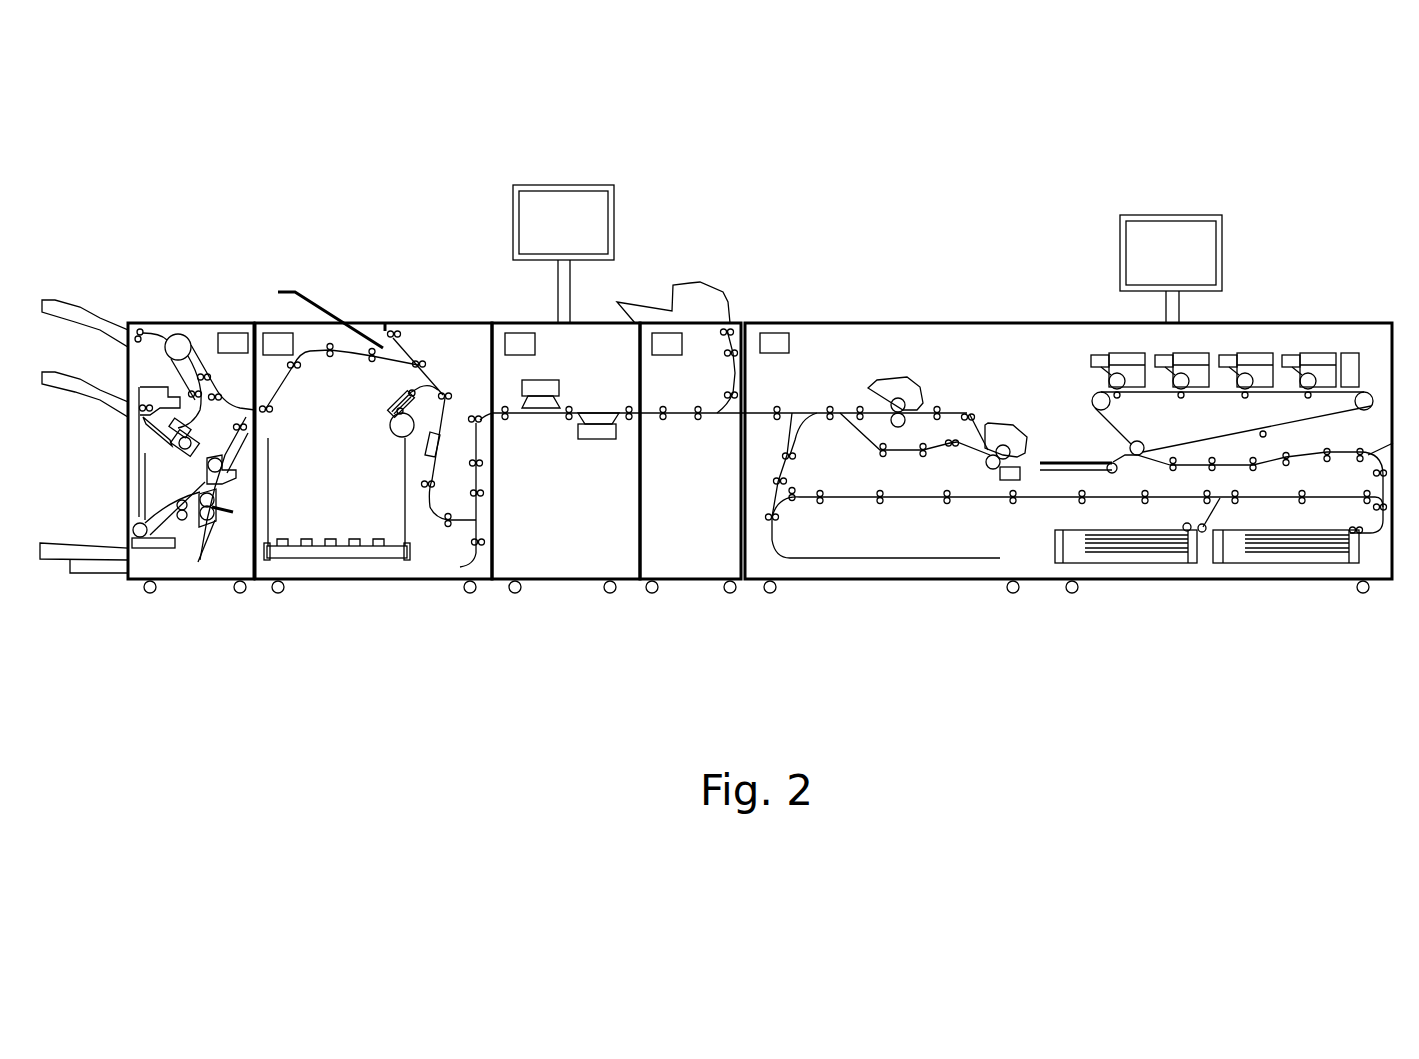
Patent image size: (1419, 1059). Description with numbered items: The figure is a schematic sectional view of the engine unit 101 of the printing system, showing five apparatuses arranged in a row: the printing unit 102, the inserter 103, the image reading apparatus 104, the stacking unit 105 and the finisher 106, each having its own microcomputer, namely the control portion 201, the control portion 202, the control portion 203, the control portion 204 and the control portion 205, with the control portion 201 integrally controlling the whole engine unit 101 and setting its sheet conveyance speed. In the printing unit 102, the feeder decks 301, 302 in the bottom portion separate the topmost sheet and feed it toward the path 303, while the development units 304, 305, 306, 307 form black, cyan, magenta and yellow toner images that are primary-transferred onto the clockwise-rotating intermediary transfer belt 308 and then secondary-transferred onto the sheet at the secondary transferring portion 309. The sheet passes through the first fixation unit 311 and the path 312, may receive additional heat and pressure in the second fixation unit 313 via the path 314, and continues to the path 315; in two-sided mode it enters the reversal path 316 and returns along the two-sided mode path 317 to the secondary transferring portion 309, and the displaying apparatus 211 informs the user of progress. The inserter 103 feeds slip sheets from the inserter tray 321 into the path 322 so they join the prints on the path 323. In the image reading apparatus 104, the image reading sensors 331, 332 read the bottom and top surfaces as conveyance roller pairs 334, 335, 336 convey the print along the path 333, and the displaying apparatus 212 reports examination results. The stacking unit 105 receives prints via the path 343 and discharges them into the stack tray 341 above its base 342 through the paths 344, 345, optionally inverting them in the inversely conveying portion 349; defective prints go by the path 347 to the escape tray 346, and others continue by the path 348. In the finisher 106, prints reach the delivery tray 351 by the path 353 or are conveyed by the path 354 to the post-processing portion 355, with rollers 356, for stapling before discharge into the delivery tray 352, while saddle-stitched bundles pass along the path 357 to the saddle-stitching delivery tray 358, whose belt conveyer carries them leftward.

The engine unit 101 is at (1408, 150).
The printing unit 102 is at (870, 580).
The inserter 103 is at (693, 580).
The image reading apparatus 104 is at (562, 580).
The stacking unit 105 is at (447, 580).
The finisher 106 is at (220, 580).
The control portion 201 is at (790, 340).
The control portion 202 is at (668, 356).
The control portion 203 is at (508, 333).
The control portion 204 is at (273, 333).
The control portion 205 is at (232, 333).
The displaying apparatus 211 is at (1168, 226).
The displaying apparatus 212 is at (540, 194).
The feeder deck 301 is at (1147, 563).
The feeder deck 302 is at (1290, 563).
The path 303 is at (1338, 456).
The development unit 304 is at (1310, 352).
The development unit 305 is at (1250, 352).
The development unit 306 is at (1190, 352).
The development unit 307 is at (1128, 352).
The intermediary transfer belt 308 is at (1200, 446).
The secondary transferring portion 309 is at (1130, 455).
The first fixation unit 311 is at (997, 425).
The path 312 is at (853, 432).
The second fixation unit 313 is at (890, 380).
The bypass conveyance path 314 is at (848, 411).
The path 315 is at (790, 411).
The reversal path 316 is at (833, 557).
The two-sided mode path 317 is at (967, 499).
The inserter tray 321 is at (617, 302).
The path 322 is at (733, 372).
The conveyance path 323 is at (663, 417).
The image reading sensor 331 is at (605, 440).
The image reading sensor 332 is at (568, 368).
The path 333 is at (592, 411).
The conveyance roller pair 334 is at (622, 412).
The conveyance roller pair 335 is at (569, 417).
The conveyance roller pair 336 is at (505, 417).
The stack tray 341 is at (336, 492).
The stack tray base 342 is at (340, 560).
The path 343 is at (478, 420).
The path 344 is at (437, 510).
The path 345 is at (418, 385).
The escape tray 346 is at (343, 320).
The path 347 is at (400, 338).
The path 348 is at (312, 362).
The inversely conveying portion 349 is at (460, 567).
The delivery tray 351 is at (52, 300).
The delivery tray 352 is at (52, 372).
The path 353 is at (170, 335).
The path 354 is at (180, 378).
The post-processing portion 355 is at (175, 427).
The conveyance roller 356 is at (214, 522).
The path 357 is at (150, 546).
The saddle-stitching delivery tray 358 is at (52, 543).